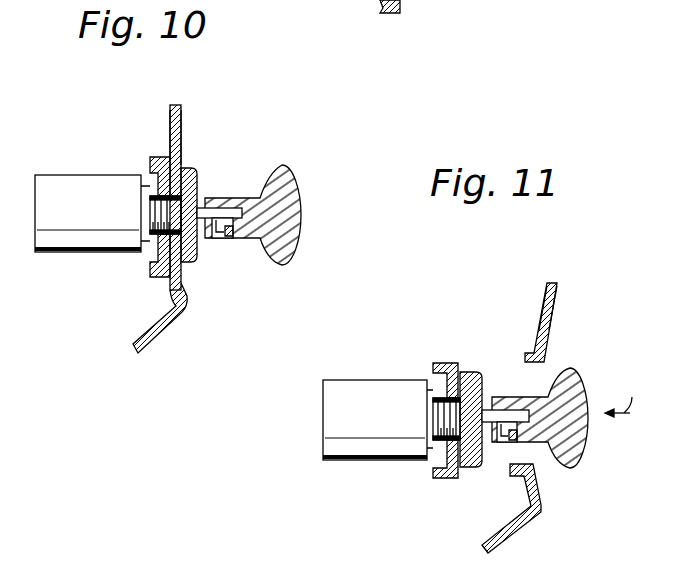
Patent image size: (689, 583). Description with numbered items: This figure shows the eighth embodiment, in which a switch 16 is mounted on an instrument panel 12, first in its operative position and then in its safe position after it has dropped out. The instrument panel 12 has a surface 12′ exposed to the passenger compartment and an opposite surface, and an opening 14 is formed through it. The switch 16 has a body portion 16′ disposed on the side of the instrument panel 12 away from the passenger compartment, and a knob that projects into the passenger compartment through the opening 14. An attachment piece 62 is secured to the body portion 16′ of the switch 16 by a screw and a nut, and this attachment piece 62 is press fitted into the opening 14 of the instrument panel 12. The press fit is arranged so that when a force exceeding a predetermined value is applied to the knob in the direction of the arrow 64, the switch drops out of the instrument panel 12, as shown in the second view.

In FIG. 10, the instrument panel 12 is at (176, 102).
In FIG. 11, the instrument panel 12 is at (549, 281).
In FIG. 10, the surface 12′ is at (183, 138).
In FIG. 11, the surface 12′ is at (552, 318).
In FIG. 10, the opening 14 is at (194, 174).
In FIG. 11, the opening 14 is at (547, 371).
In FIG. 10, the switch 16 is at (93, 222).
In FIG. 11, the switch 16 is at (391, 425).
In FIG. 10, the switch body 16′ is at (53, 253).
In FIG. 10, the attachment piece 62 is at (150, 170).
In FIG. 11, the attachment piece 62 is at (457, 478).
In FIG. 11, the arrow 64 is at (622, 392).